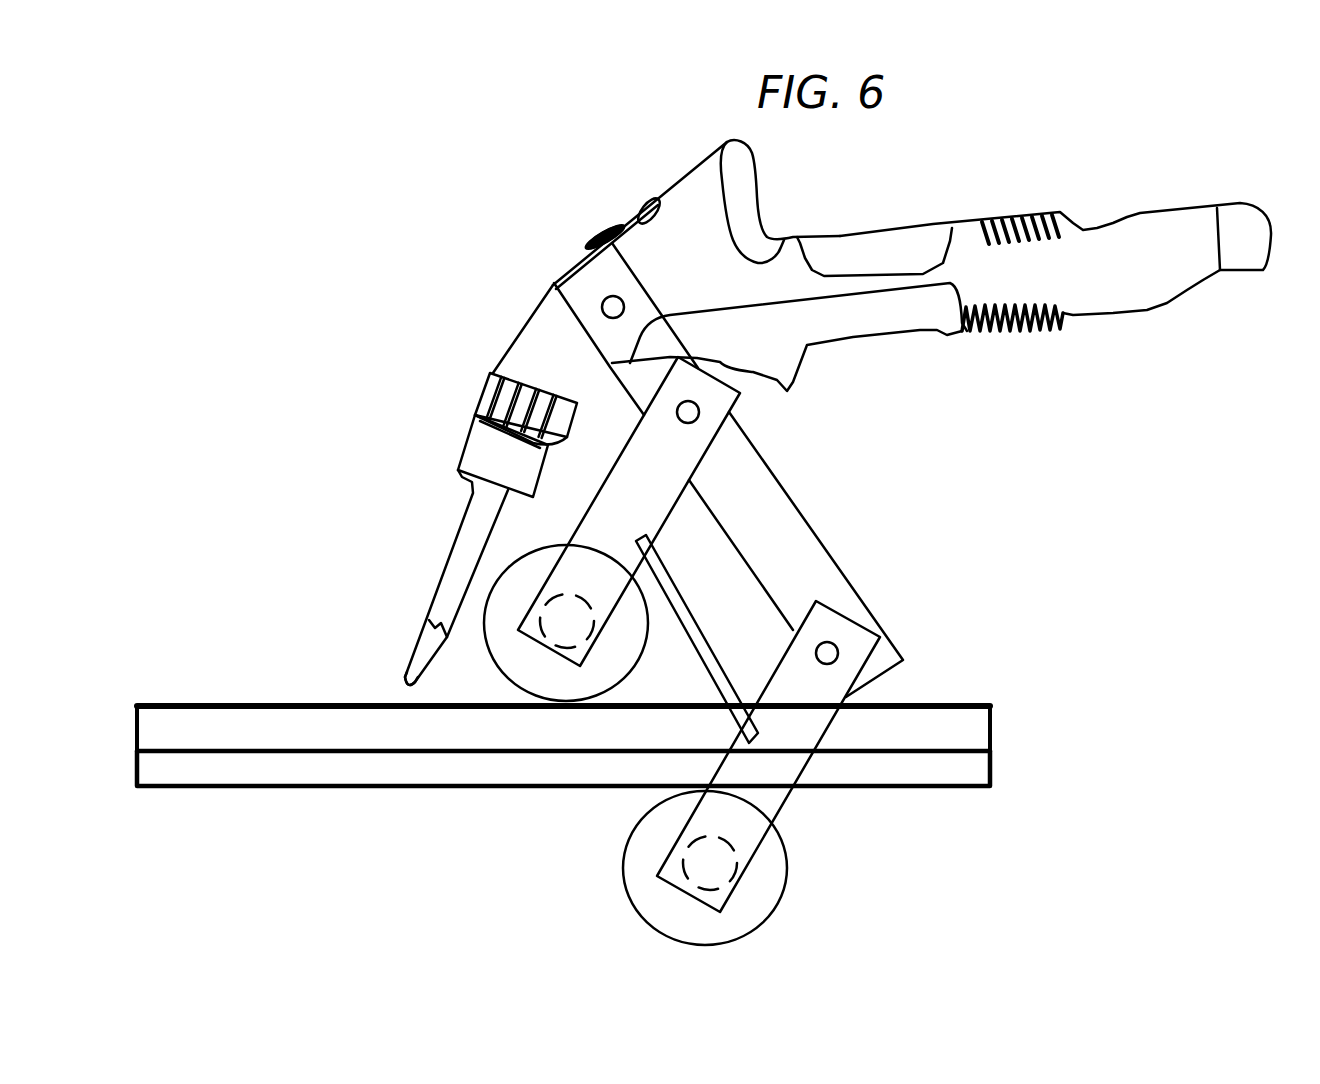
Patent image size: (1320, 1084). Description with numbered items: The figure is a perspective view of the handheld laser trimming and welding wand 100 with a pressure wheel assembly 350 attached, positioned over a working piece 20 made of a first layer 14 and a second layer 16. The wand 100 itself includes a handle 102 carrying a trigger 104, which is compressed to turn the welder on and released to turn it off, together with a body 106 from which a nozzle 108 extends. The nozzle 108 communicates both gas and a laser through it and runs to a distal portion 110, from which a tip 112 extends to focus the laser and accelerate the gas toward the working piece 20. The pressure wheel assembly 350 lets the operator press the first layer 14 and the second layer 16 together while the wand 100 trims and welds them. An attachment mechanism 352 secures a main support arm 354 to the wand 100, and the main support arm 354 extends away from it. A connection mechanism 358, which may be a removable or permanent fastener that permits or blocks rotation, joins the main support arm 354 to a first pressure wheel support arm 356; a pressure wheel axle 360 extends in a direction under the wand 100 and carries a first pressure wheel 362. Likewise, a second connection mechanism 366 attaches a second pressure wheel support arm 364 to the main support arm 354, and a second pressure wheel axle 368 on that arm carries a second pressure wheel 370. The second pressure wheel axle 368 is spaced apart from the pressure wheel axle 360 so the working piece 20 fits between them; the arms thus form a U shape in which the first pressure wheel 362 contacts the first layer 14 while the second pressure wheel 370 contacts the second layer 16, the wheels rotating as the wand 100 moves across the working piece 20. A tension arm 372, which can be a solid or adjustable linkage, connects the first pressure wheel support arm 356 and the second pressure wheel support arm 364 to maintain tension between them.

The handheld laser trimming and welding wand 100 is at (1053, 182).
The handle 102 is at (1091, 246).
The trigger 104 is at (790, 368).
The body 106 is at (732, 268).
The nozzle 108 is at (472, 532).
The distal portion 110 is at (437, 613).
The tip 112 is at (407, 677).
The pressure wheel assembly 350 is at (667, 470).
The attachment mechanism 352 is at (603, 298).
The main support arm 354 is at (615, 272).
The first pressure wheel support arm 356 is at (677, 454).
The connection mechanism 358 is at (698, 409).
The pressure wheel axle 360 is at (556, 645).
The first pressure wheel 362 is at (553, 690).
The second pressure wheel support arm 364 is at (815, 697).
The second connection mechanism 366 is at (840, 650).
The second pressure wheel axle 368 is at (717, 858).
The second pressure wheel 370 is at (717, 927).
The tension arm 372 is at (757, 741).
The working piece 20 is at (977, 700).
The first layer 14 is at (970, 737).
The second layer 16 is at (977, 780).